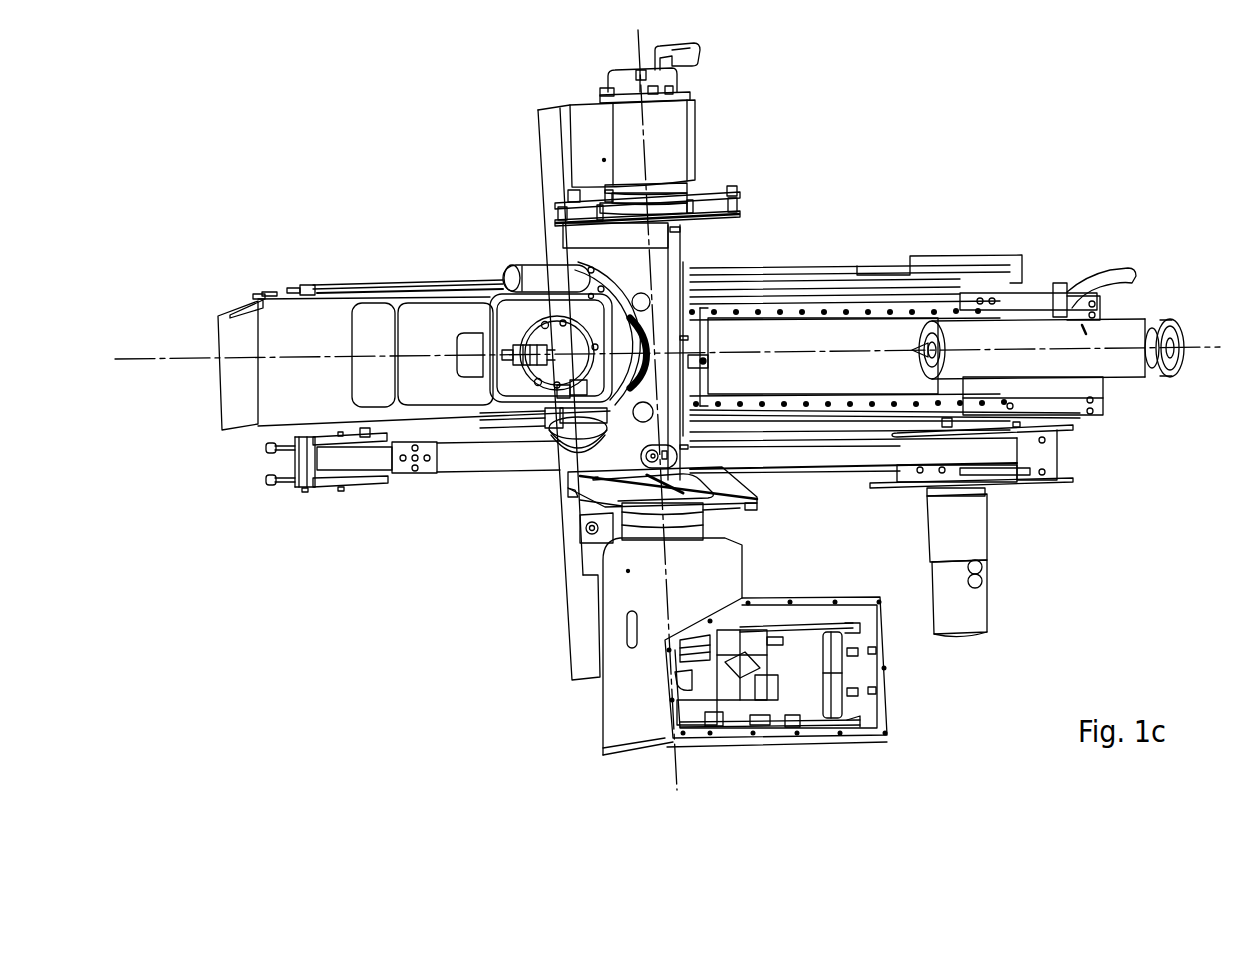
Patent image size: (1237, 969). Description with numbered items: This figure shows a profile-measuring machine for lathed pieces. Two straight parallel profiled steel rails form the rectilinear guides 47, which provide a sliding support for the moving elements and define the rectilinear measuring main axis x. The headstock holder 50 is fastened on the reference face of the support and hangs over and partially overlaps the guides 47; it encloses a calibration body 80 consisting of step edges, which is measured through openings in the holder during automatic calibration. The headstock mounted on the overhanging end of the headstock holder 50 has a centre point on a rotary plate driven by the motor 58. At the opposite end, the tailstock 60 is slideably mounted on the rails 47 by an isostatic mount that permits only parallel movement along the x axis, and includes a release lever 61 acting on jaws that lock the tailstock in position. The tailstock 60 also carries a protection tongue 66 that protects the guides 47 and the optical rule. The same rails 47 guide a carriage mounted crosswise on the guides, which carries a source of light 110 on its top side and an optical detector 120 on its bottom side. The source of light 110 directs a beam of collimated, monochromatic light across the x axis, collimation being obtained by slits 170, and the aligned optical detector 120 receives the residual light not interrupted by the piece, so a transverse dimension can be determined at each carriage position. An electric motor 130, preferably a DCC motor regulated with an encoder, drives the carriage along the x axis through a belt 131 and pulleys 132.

The source of light 110 is at (683, 140).
The slits 170 is at (686, 364).
The protection tongue 66 is at (860, 336).
The rectilinear guides 47 is at (881, 334).
The release lever 61 is at (1132, 272).
The tailstock 60 is at (1100, 358).
The headstock holder 50 is at (328, 328).
The calibration body 80 is at (505, 349).
The motor 58 is at (575, 443).
The pulleys 132 is at (413, 505).
The belt 131 is at (840, 450).
The electric motor 130 is at (970, 540).
The optical detector 120 is at (628, 697).